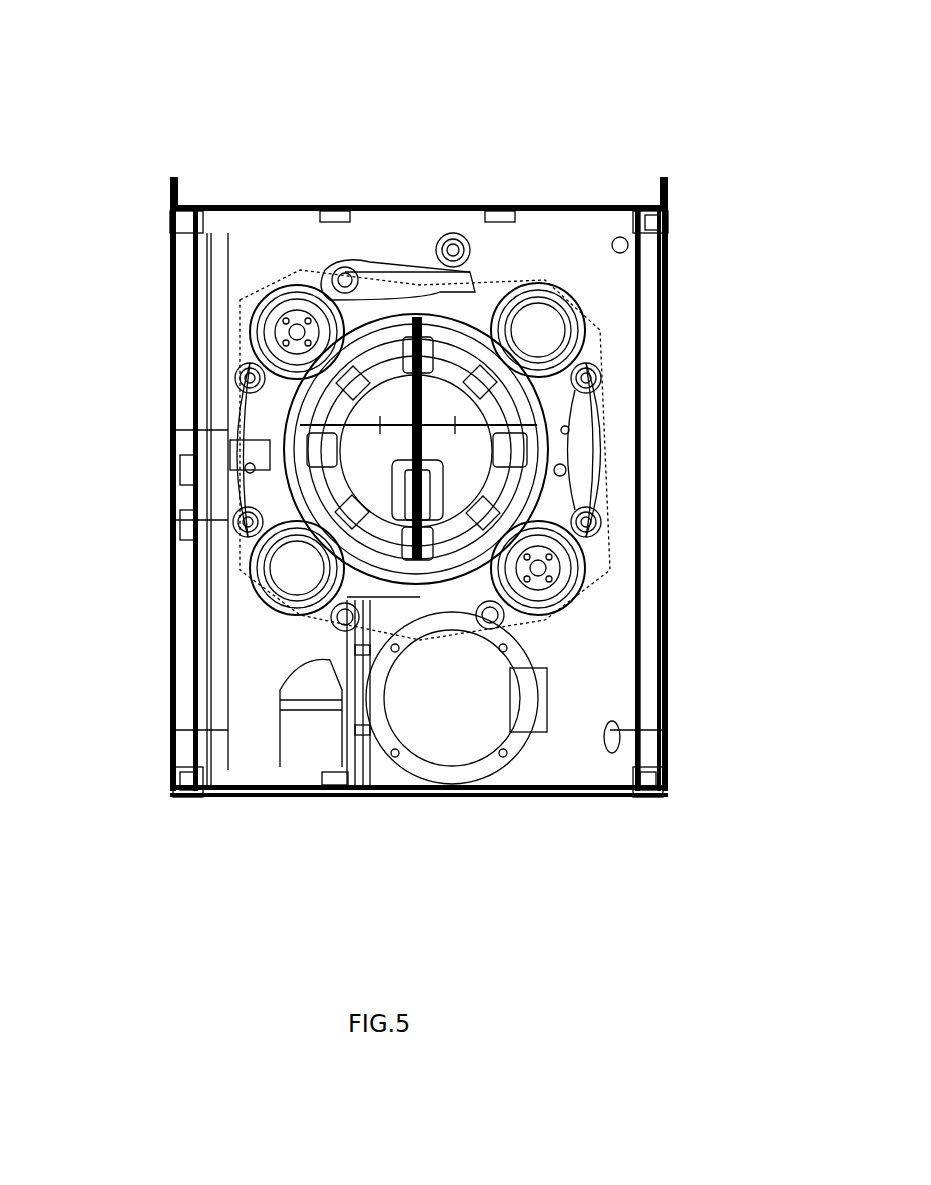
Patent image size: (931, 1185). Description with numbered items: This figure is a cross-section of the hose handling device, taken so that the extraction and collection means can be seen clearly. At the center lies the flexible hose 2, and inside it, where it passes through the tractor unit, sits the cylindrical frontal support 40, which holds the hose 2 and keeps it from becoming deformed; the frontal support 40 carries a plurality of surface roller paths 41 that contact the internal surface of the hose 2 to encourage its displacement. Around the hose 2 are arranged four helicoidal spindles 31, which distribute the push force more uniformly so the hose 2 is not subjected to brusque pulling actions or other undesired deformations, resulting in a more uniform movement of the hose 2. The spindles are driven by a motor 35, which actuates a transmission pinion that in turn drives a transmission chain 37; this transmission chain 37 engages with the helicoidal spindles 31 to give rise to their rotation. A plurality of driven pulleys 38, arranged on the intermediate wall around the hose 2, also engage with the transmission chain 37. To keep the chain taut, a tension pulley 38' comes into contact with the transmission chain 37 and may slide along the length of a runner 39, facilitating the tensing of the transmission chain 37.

The flexible hose 2 is at (380, 583).
The helicoidal spindles 31 is at (262, 322).
The motor 35 is at (460, 710).
The transmission chain 37 is at (292, 425).
The driven pulleys 38 is at (399, 432).
The tension pulley 38' is at (396, 140).
The runner 39 is at (435, 258).
The frontal support 40 is at (455, 350).
The surface roller paths 41 is at (520, 513).